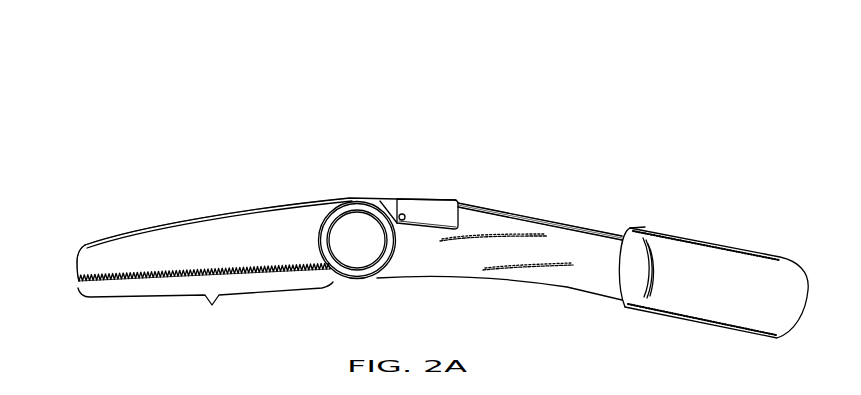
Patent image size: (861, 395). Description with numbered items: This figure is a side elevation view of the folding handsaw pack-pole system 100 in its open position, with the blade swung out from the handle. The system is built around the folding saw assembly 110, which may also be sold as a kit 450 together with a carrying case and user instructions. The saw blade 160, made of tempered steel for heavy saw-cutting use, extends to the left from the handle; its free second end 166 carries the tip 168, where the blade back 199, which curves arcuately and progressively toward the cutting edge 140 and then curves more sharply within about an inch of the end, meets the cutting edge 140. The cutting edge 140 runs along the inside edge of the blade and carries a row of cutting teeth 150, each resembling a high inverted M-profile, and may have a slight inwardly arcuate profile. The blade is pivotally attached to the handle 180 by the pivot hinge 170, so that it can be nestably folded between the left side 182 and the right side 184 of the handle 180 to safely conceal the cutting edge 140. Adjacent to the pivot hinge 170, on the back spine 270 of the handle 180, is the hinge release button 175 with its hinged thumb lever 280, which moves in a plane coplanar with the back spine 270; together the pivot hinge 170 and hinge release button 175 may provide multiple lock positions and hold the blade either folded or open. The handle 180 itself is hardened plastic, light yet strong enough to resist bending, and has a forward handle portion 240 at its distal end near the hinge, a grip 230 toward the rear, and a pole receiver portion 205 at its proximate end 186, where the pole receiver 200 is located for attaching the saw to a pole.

The folding handsaw pack-pole system 100 is at (598, 48).
The folding saw assembly 110 is at (613, 78).
The kit 450 is at (633, 112).
The cutting edge 140 is at (266, 262).
The cutting teeth 150 is at (215, 263).
The saw blade 160 is at (183, 251).
The second end 166 is at (88, 257).
The tip 168 is at (76, 268).
The blade back 199 is at (143, 224).
The pivot hinge 170 is at (365, 265).
The hinge release button 175 is at (414, 200).
The hinged thumb lever 280 is at (437, 200).
The handle 180 is at (570, 284).
The left side 182 is at (520, 212).
The right side 184 is at (553, 218).
The back spine 270 is at (483, 203).
The forward handle portion 240 is at (472, 272).
The grip 230 is at (657, 226).
The pole receiver 200 is at (726, 292).
The pole receiver portion 205 is at (721, 238).
The proximate end 186 is at (774, 342).